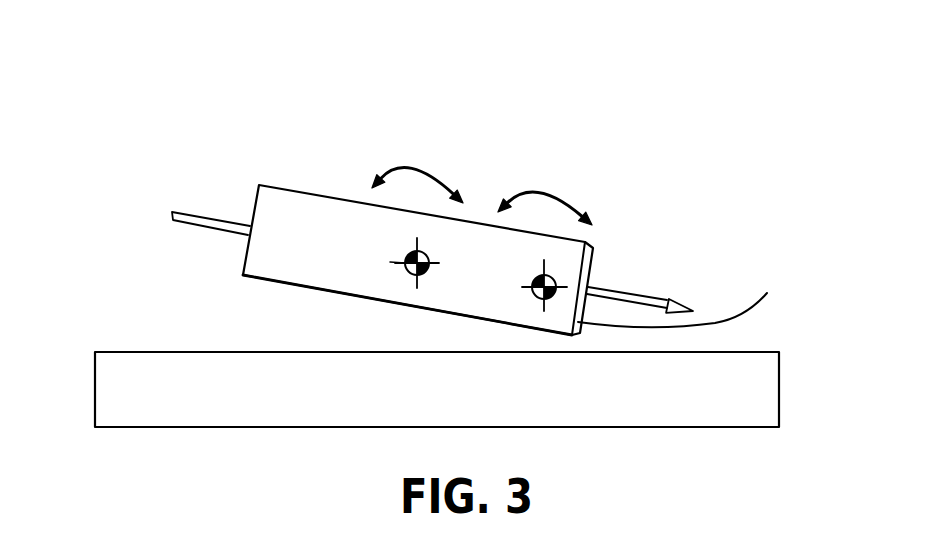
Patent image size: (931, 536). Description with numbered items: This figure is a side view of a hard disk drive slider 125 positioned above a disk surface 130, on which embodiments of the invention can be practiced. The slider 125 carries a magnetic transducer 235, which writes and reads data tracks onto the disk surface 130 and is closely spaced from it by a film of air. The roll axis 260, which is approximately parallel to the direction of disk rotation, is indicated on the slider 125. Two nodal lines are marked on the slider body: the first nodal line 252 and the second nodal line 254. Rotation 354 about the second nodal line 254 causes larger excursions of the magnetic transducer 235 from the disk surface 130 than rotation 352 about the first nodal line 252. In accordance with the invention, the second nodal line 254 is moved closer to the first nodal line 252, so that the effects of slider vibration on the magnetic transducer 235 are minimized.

The hard disk drive slider 125 is at (471, 176).
The disk surface 130 is at (147, 352).
The magnetic transducer 235 is at (684, 294).
The P1 nodal line 252 is at (552, 279).
The P2 nodal line 254 is at (410, 255).
The roll axis 260 is at (620, 290).
The rotation about P1 nodal line 352 is at (550, 195).
The rotation about P2 nodal line 354 is at (400, 173).